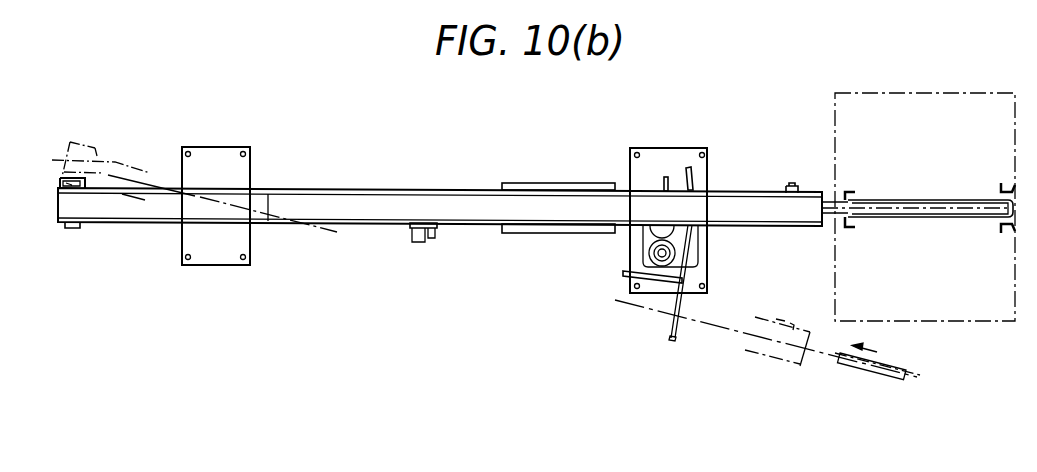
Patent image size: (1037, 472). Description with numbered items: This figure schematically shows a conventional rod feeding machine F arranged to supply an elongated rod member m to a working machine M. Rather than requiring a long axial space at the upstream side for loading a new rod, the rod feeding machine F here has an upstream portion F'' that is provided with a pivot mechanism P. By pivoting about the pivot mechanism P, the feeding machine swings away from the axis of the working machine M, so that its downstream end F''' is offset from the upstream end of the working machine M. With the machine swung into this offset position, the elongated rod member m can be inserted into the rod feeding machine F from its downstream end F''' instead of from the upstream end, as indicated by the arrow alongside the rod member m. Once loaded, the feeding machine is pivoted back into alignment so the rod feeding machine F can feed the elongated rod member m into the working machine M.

The rod feeding machine F is at (453, 221).
The pivot mechanism P is at (220, 157).
The working machine M is at (842, 137).
The elongated rod member m is at (888, 210).
The upstream portion of the rod feeding machine F'' is at (194, 167).
The downstream end of the rod feeding machine F''' is at (766, 350).